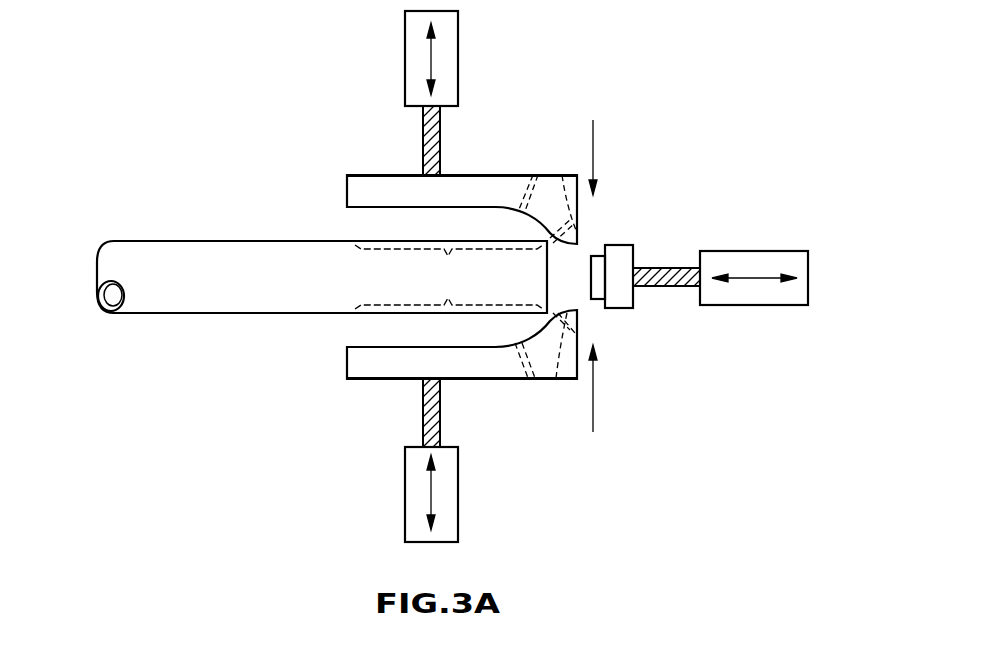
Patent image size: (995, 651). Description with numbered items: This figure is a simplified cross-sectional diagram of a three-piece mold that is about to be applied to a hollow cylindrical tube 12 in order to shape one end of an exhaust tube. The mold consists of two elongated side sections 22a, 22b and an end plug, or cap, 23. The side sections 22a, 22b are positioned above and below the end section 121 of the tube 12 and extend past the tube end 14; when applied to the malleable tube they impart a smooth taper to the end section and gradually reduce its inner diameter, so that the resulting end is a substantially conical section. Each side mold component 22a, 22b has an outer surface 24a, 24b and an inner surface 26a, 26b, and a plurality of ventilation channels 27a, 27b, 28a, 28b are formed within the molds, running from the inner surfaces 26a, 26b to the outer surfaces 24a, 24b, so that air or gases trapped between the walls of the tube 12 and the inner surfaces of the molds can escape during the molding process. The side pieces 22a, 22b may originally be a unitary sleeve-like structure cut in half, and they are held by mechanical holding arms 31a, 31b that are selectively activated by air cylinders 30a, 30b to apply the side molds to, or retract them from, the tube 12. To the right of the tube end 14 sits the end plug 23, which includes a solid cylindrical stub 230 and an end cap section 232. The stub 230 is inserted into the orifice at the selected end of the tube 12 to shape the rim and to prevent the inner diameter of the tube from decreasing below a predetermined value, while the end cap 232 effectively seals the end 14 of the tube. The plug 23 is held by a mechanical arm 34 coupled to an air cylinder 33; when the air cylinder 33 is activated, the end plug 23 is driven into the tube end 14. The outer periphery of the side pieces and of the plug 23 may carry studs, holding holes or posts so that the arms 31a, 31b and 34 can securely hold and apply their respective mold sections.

The hollow cylindrical tube 12 is at (195, 251).
The end section 121 is at (449, 277).
The tube end 14 is at (549, 277).
The side section 22a is at (383, 183).
The side section 22b is at (390, 367).
The outer surface 24a is at (472, 175).
The outer surface 24b is at (392, 345).
The inner surface 26a is at (388, 208).
The inner surface 26b is at (362, 379).
The ventilation channel 27a is at (533, 175).
The ventilation channel 27b is at (515, 379).
The ventilation channel 28a is at (562, 175).
The ventilation channel 28b is at (556, 379).
The air cylinder 30a is at (405, 57).
The air cylinder 30b is at (405, 513).
The mechanical holding arm 31a is at (423, 128).
The mechanical holding arm 31b is at (423, 430).
The end plug 23 is at (641, 277).
The solid cylindrical stub 230 is at (598, 302).
The end cap section 232 is at (628, 310).
The mechanical arm 34 is at (680, 268).
The air cylinder 33 is at (786, 251).